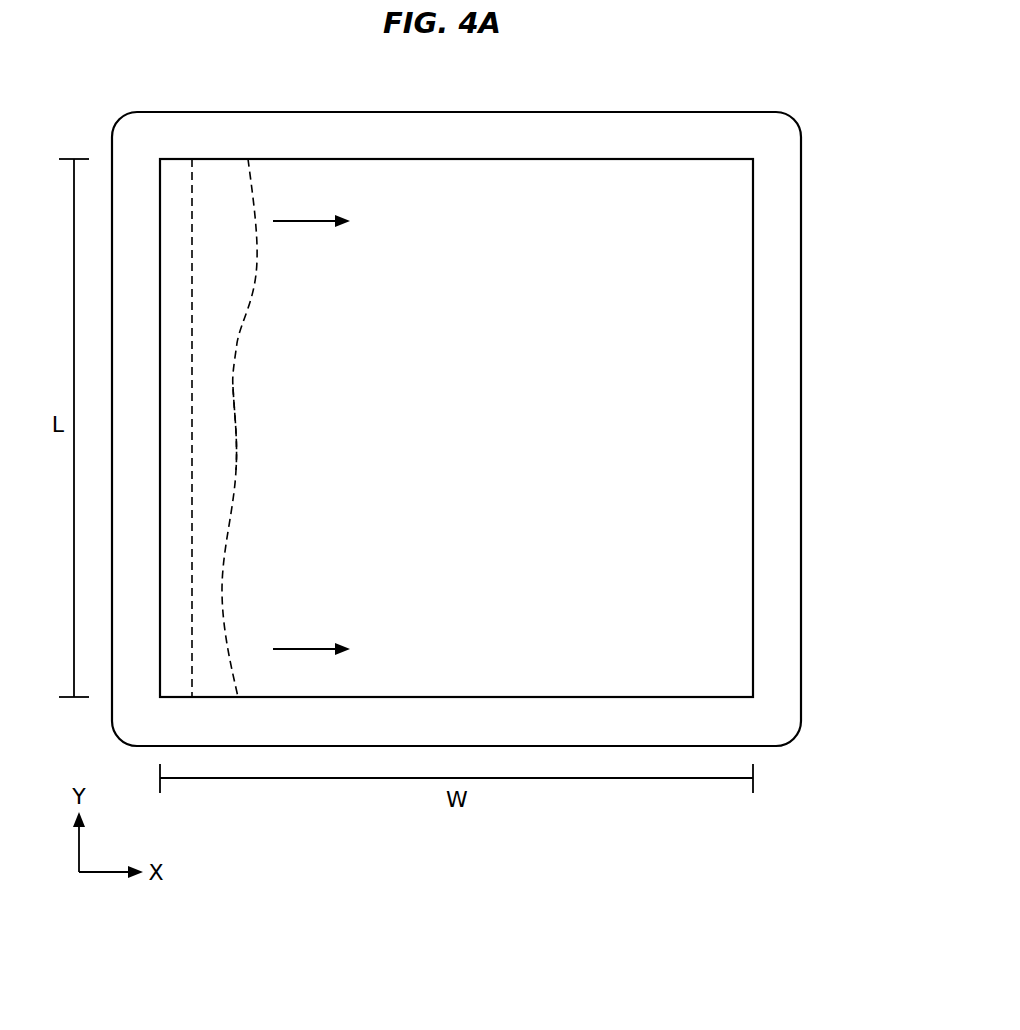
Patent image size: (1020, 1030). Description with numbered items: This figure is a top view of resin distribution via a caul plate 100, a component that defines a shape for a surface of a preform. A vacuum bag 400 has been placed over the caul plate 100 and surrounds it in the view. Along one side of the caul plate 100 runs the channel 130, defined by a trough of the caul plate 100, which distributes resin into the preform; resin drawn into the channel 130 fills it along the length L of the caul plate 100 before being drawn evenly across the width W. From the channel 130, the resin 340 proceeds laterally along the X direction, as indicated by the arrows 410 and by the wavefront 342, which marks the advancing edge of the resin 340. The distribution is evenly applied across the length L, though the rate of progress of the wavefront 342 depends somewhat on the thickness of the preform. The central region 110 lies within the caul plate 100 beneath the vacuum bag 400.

The caul plate 100 is at (632, 63).
The display 110 is at (560, 441).
The channel 130 is at (178, 186).
The resin 340 is at (236, 274).
The wavefront 342 is at (233, 387).
The vacuum bag 400 is at (802, 298).
The arrows 410 is at (313, 221).